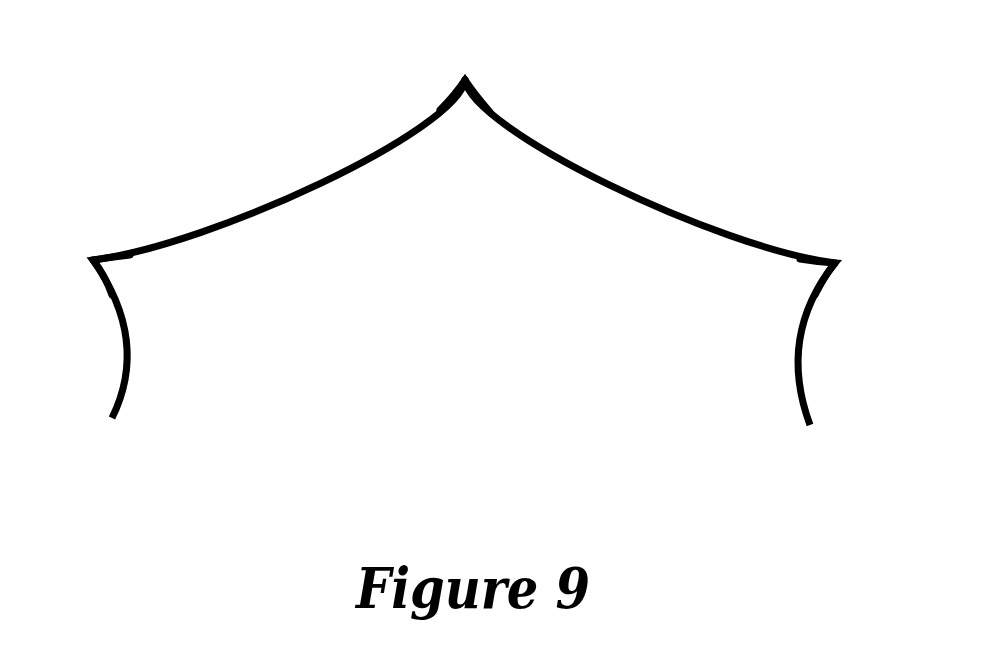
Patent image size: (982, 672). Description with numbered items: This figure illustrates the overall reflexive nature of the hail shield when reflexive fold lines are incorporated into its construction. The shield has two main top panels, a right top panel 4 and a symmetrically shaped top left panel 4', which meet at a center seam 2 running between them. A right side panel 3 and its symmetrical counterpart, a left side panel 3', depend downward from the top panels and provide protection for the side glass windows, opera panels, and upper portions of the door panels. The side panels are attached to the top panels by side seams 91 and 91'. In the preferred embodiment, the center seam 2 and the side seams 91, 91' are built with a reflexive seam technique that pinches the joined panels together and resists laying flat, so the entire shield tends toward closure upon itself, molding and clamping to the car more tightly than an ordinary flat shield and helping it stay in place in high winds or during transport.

The center seam 2 is at (463, 80).
The right top panel 4 is at (650, 171).
The top left panel 4' is at (279, 170).
The side seam 91 is at (861, 245).
The side seam 91' is at (74, 245).
The right side panel 3 is at (831, 344).
The left side panel 3' is at (82, 339).